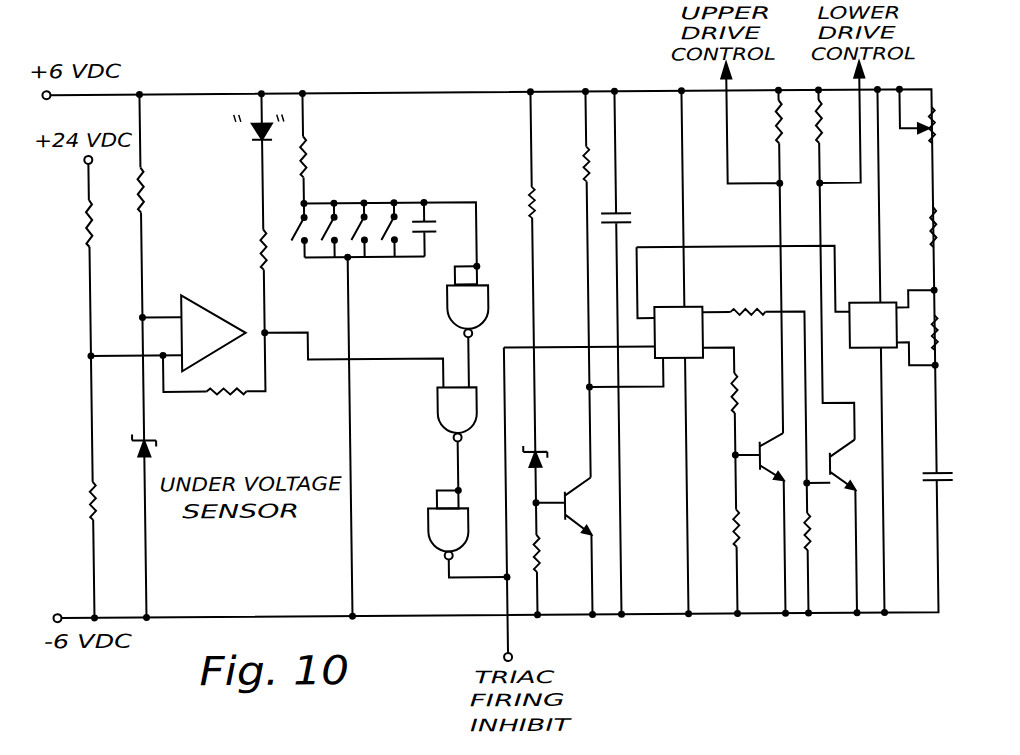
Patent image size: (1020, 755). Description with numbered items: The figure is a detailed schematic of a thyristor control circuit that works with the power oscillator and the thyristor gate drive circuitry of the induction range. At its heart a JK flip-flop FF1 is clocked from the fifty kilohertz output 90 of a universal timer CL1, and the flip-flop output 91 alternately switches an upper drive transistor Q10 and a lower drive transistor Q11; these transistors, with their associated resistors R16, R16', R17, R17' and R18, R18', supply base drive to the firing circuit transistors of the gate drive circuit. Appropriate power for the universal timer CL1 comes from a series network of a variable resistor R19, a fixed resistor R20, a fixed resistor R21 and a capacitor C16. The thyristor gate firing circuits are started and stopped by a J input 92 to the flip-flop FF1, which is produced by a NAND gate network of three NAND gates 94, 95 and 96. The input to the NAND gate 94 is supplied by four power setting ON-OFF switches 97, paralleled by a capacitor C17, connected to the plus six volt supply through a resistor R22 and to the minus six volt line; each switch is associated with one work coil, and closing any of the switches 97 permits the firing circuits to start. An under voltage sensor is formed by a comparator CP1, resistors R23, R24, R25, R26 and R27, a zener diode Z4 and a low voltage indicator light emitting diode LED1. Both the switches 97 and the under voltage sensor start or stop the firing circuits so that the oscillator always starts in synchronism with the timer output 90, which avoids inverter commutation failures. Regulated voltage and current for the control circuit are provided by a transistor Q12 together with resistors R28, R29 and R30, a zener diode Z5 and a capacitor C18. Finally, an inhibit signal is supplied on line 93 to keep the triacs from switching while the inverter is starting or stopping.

The 50 kilohertz output 90 is at (723, 247).
The JK flip-flop output 91 is at (737, 367).
The J input 92 is at (561, 347).
The inhibit line 93 is at (500, 626).
The NAND gate 94 is at (448, 317).
The NAND gate 95 is at (438, 413).
The NAND gate 96 is at (424, 542).
The power setting ON-OFF switches 97 is at (384, 190).
The resistor R16 is at (756, 414).
The resistor R16' is at (754, 373).
The resistor R17 is at (757, 534).
The resistor R17' is at (831, 548).
The resistor R18 is at (752, 122).
The resistor R18' is at (840, 122).
The variable resistor R19 is at (928, 148).
The fixed resistor R20 is at (930, 234).
The fixed resistor R21 is at (932, 357).
The resistor R22 is at (312, 150).
The resistor R23 is at (86, 229).
The resistor R24 is at (94, 519).
The resistor R25 is at (230, 396).
The resistor R26 is at (262, 250).
The resistor R27 is at (147, 190).
The resistor R28 is at (528, 186).
The resistor R29 is at (535, 567).
The resistor R30 is at (585, 153).
The capacitor C16 is at (930, 486).
The capacitor C17 is at (433, 221).
The capacitor C18 is at (623, 214).
The zener diode Z4 is at (158, 434).
The zener diode Z5 is at (546, 453).
The upper drive transistor Q10 is at (744, 470).
The lower drive transistor Q11 is at (830, 470).
The transistor Q12 is at (565, 513).
The low voltage indicator light emitting diode LED1 is at (256, 140).
The comparator CP1 is at (179, 333).
The JK flip-flop FF1 is at (678, 332).
The universal timer CL1 is at (873, 324).